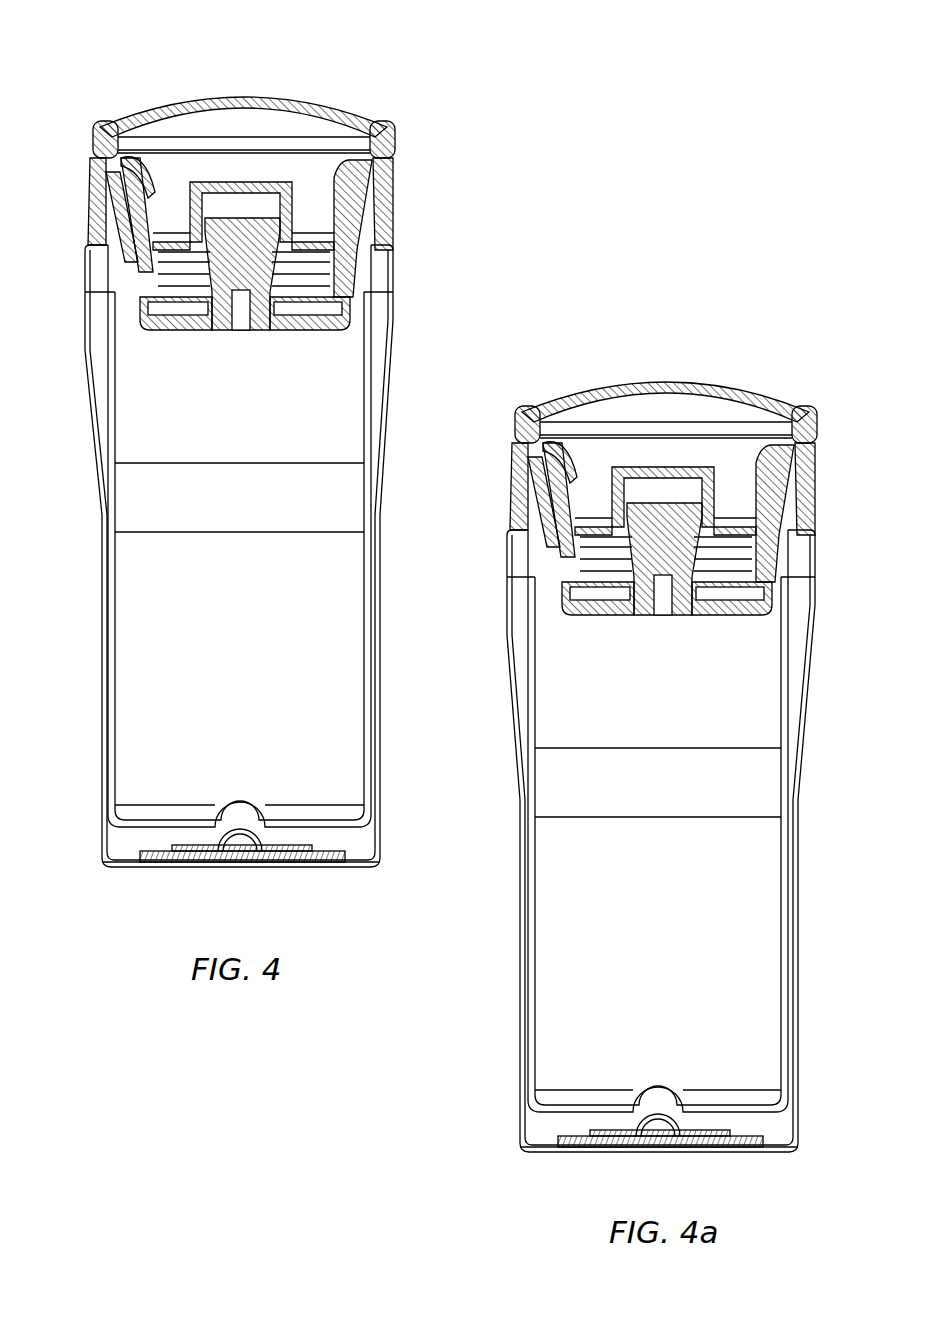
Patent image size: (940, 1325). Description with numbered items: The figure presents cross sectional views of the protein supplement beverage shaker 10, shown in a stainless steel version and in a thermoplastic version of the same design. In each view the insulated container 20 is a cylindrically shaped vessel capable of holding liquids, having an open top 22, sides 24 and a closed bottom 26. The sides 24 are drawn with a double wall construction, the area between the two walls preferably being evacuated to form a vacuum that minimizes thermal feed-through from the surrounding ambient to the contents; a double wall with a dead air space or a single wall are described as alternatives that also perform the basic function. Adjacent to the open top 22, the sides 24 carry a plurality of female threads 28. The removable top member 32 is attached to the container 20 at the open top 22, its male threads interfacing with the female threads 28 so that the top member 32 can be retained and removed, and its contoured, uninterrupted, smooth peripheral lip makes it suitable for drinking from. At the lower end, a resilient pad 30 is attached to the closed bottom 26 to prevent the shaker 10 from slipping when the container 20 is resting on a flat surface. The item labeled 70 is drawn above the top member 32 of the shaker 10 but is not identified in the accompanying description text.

In FIG. 4, the protein supplement beverage shaker 10 is at (393, 497).
In FIG. 4a, the protein supplement beverage shaker 10 is at (647, 880).
In FIG. 4, the insulated container 20 is at (110, 648).
In FIG. 4a, the insulated container 20 is at (603, 821).
In FIG. 4, the open top 22 is at (100, 125).
In FIG. 4a, the open top 22 is at (642, 443).
In FIG. 4, the sides 24 is at (86, 373).
In FIG. 4a, the sides 24 is at (647, 841).
In FIG. 4, the closed bottom 26 is at (365, 870).
In FIG. 4a, the closed bottom 26 is at (683, 1184).
In FIG. 4, the female threads 28 is at (385, 227).
In FIG. 4a, the female threads 28 is at (721, 541).
In FIG. 4, the resilient pad 30 is at (148, 868).
In FIG. 4a, the resilient pad 30 is at (633, 1172).
In FIG. 4, the removable top member 32 is at (390, 172).
In FIG. 4a, the removable top member 32 is at (809, 455).
In FIG. 4, the lid 70 is at (255, 83).
In FIG. 4a, the lid 70 is at (674, 441).